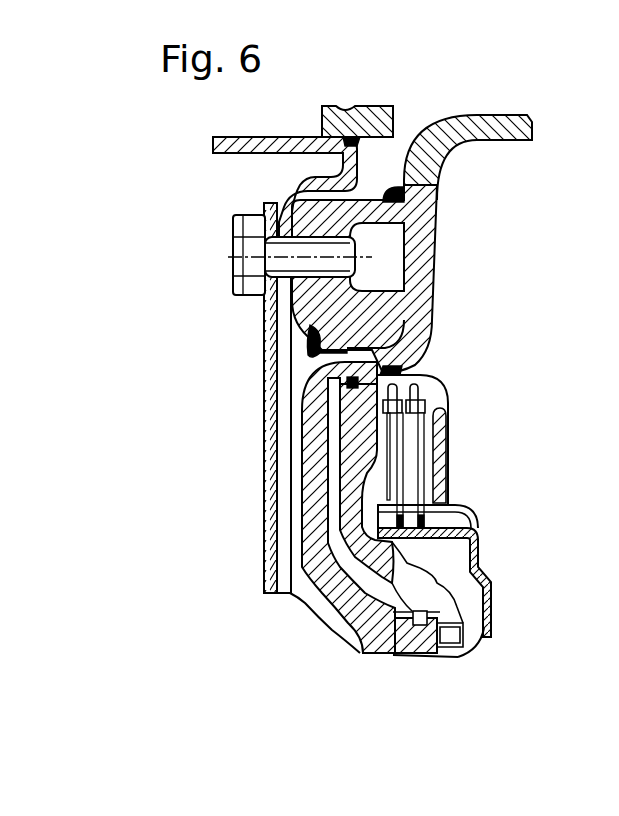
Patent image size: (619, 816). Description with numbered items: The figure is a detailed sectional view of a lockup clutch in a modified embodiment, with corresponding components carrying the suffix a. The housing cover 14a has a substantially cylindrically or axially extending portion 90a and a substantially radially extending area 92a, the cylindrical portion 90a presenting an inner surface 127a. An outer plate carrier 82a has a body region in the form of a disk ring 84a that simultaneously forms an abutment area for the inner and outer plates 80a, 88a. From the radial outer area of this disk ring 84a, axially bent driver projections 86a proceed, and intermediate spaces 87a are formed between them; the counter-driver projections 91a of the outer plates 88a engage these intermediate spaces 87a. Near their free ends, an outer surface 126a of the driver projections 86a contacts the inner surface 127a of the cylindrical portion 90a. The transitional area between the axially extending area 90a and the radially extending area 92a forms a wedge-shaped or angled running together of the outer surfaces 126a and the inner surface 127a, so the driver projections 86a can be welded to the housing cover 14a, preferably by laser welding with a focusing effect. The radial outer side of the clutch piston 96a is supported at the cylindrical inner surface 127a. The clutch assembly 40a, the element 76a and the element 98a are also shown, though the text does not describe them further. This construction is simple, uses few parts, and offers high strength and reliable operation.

The housing cover 14a is at (458, 140).
The radially extending area 92a is at (418, 253).
The inner surface 127a is at (263, 293).
The cylindrically extending portion 90a is at (405, 322).
The outer surface 126a is at (400, 367).
The intermediate space 87a is at (300, 397).
The driver projection 86a is at (400, 376).
The counter-driver projection 91a is at (422, 392).
The bearing unit 40a is at (395, 423).
The outer plate carrier 82a is at (445, 438).
The outer plate 88a is at (355, 480).
The disk ring 84a is at (437, 488).
The inner plate 80a is at (455, 507).
The clutch piston 96a is at (266, 530).
The cap 76a is at (484, 572).
The nut 98a is at (415, 650).